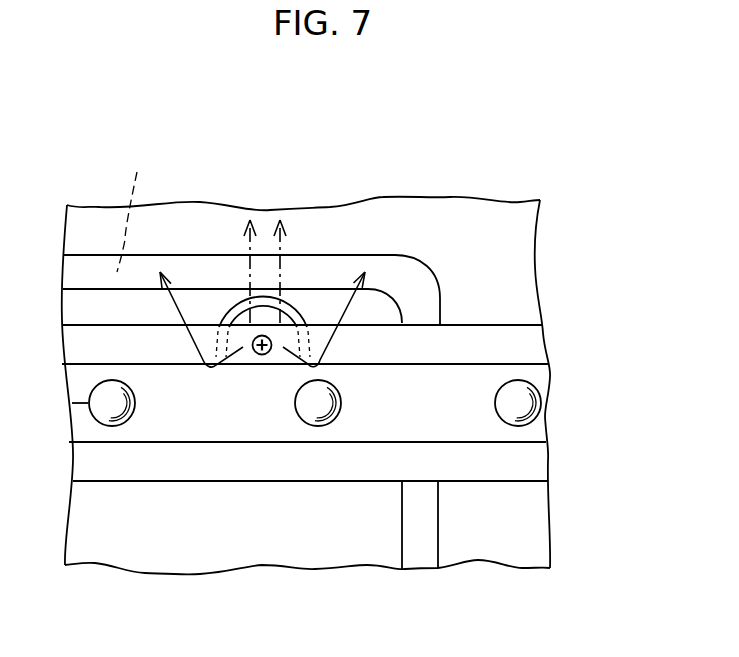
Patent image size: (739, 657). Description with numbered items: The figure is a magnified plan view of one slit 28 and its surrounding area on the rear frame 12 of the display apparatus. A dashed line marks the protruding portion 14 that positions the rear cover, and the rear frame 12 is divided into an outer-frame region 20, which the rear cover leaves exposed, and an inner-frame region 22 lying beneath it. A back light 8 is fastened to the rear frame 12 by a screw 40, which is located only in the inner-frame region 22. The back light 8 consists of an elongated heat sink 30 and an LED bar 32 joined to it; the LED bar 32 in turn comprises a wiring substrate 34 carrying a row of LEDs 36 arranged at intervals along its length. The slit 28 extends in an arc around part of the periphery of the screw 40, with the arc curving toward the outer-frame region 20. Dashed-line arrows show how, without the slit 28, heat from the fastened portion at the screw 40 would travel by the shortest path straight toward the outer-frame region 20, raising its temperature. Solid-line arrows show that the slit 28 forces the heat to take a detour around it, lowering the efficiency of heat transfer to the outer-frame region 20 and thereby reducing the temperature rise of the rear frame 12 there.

The back light 8 is at (670, 313).
The rear frame 12 is at (513, 240).
The protruding portion 14 is at (140, 210).
The outer-frame region 20 is at (203, 233).
The inner-frame region 22 is at (238, 550).
The slit 28 is at (297, 308).
The heat sink 30 is at (520, 344).
The LED bar 32 is at (615, 355).
The wiring substrate 34 is at (528, 373).
The LED 36 is at (520, 403).
The screw 40 is at (260, 355).